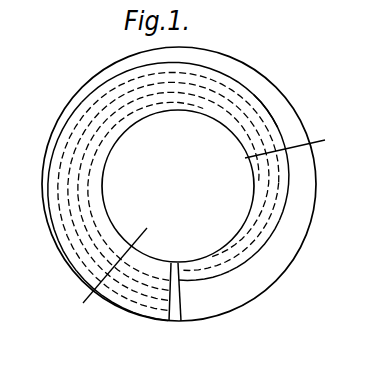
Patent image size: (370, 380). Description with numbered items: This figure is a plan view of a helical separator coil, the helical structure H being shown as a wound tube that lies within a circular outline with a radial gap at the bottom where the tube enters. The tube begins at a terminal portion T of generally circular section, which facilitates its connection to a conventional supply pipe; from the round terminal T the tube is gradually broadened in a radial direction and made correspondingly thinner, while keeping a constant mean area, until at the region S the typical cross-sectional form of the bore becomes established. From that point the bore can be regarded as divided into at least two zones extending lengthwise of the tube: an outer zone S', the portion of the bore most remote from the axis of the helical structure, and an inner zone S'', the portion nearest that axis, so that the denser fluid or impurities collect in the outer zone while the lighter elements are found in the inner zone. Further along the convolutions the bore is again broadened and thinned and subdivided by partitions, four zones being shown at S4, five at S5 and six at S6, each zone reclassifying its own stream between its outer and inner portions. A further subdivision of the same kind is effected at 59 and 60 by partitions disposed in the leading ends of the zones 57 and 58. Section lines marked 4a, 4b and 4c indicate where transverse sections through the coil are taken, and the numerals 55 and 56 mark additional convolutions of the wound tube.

The helical structure H is at (77, 78).
The region of established cross-sectional form S is at (308, 165).
The outer zone S' is at (229, 237).
The inner zone S'' is at (178, 186).
The four-zone region S4 is at (177, 61).
The five-zone region S5 is at (62, 131).
The six-zone region S6 is at (133, 311).
The terminal portion T is at (199, 280).
The section line 4a-4a through slot 4a is at (184, 302).
The section line 4b- 4b is at (282, 151).
The section line 4c- 4c is at (109, 268).
The spring turn 55 is at (255, 233).
The spring turn 56 is at (264, 188).
The zone 57 is at (266, 117).
The zone 58 is at (241, 127).
The subdivision 59 is at (235, 90).
The subdivision 60 is at (178, 99).